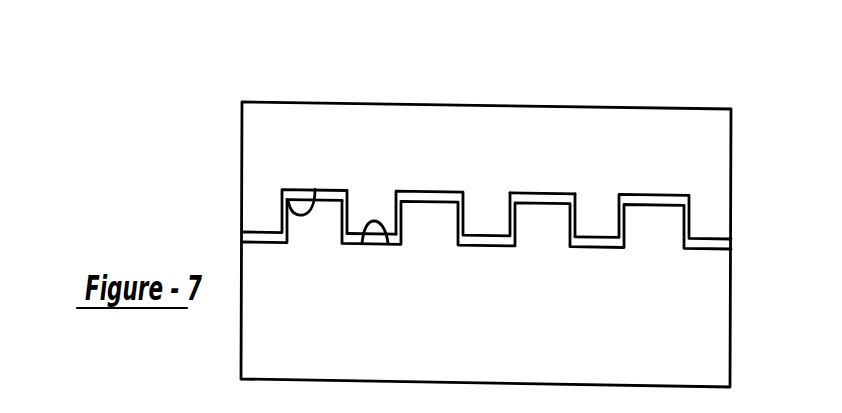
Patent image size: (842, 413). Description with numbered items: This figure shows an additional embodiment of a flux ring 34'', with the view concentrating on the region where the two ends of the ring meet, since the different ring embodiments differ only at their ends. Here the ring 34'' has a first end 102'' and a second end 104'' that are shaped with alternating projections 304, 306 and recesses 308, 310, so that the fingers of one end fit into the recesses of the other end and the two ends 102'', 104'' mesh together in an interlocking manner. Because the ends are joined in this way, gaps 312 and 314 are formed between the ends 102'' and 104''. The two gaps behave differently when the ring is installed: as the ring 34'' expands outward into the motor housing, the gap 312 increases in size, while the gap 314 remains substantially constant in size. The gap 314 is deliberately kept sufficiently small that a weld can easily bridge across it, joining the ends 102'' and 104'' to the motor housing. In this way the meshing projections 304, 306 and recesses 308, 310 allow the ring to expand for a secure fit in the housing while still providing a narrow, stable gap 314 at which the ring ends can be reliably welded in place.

The ring 34'' is at (486, 128).
The end 102'' is at (522, 222).
The end 104'' is at (521, 244).
The projection 304 is at (313, 223).
The projection 306 is at (368, 212).
The recess 308 is at (302, 215).
The recess 310 is at (363, 240).
The gap 312 is at (547, 192).
The gap 314 is at (572, 213).